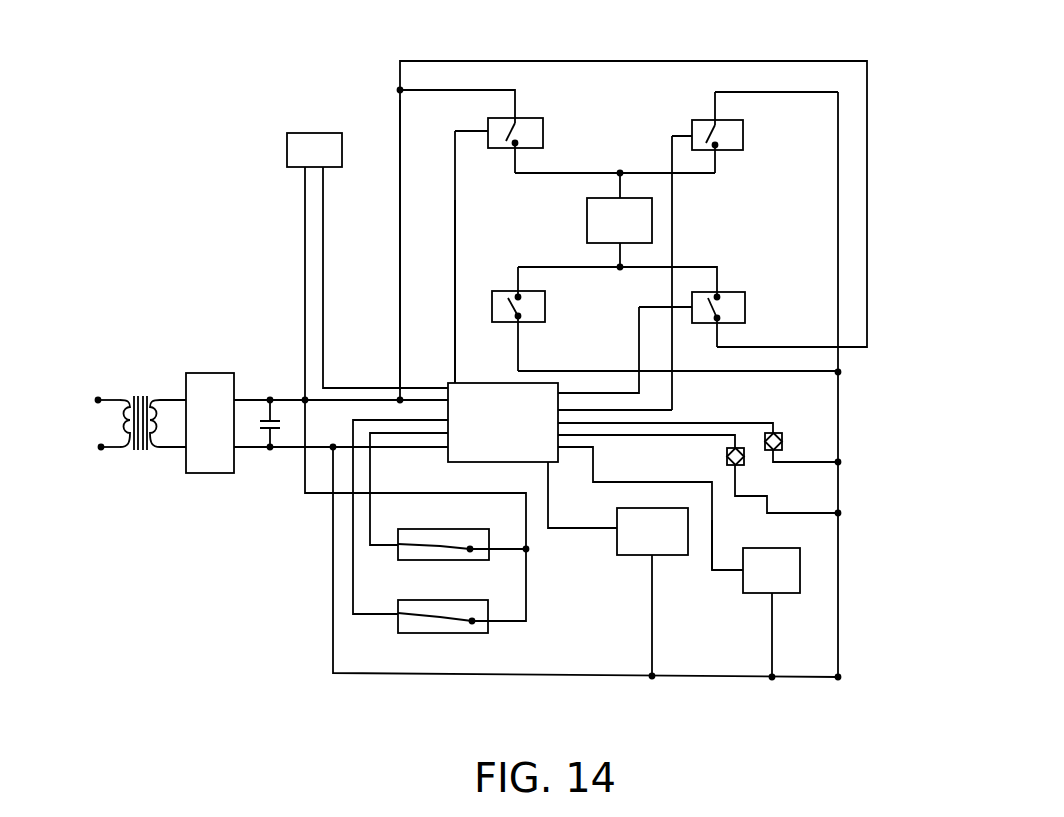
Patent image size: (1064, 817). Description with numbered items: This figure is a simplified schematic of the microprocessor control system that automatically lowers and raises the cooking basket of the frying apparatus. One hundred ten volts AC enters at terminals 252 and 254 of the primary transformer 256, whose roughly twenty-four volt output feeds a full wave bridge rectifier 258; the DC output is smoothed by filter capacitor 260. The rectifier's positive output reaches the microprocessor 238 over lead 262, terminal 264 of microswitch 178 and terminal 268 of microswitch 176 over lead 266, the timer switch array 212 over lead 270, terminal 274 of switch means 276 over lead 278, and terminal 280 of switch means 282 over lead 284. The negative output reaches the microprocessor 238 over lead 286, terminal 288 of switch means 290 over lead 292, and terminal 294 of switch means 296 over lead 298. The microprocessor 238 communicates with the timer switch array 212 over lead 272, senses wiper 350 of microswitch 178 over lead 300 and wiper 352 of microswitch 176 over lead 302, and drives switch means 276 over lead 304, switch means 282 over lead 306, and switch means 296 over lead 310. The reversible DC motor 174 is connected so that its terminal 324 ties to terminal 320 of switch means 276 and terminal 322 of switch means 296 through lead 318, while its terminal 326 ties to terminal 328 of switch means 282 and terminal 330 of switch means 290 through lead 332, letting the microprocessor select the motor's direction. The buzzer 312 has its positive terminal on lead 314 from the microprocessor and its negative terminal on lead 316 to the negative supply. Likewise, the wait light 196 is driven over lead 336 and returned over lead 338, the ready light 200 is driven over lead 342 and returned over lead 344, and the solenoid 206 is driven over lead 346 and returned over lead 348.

The lead 284 is at (592, 61).
The terminal of switch means 276 274 is at (518, 96).
The switch means 276 is at (488, 122).
The lead 304 is at (455, 183).
The terminal of switch means 290 330 is at (481, 291).
The terminal of switch means 276 320 is at (512, 162).
The lead 318 is at (640, 172).
The terminal of reversible DC motor 324 is at (617, 183).
The reversible DC motor 174 is at (619, 220).
The terminal of reversible DC motor 326 is at (617, 256).
The lead 332 is at (636, 269).
The terminal of switch means 282 328 is at (700, 266).
The terminal of switch means 296 294 is at (713, 100).
The switch means 296 is at (743, 126).
The lead 310 is at (672, 140).
The terminal of switch means 296 322 is at (715, 165).
The lead 298 is at (838, 250).
The switch means 290 is at (545, 307).
The terminal of switch means 290 288 is at (518, 343).
The switch means 282 is at (745, 305).
The terminal of switch means 282 280 is at (760, 347).
The lead 306 is at (639, 343).
The lead 292 is at (840, 375).
The microprocessor 238 is at (503, 422).
The lead 336 is at (730, 421).
The wait light 196 is at (783, 434).
The lead 342 is at (627, 436).
The ready light 200 is at (727, 453).
The lead 338 is at (802, 463).
The lead 344 is at (745, 497).
The solenoid 206 is at (771, 570).
The lead 346 is at (712, 568).
The lead 348 is at (775, 650).
The lead 314 is at (549, 537).
The buzzer 312 is at (643, 542).
The lead 316 is at (652, 623).
The terminal 252 is at (98, 398).
The terminal 254 is at (101, 449).
The primary transformer 256 is at (143, 398).
The full wave bridge rectifier 258 is at (212, 373).
The lead 262 is at (348, 399).
The lead 286 is at (290, 446).
The filter capacitor 260 is at (268, 432).
The timer switch array 212 is at (314, 150).
The lead 270 is at (305, 265).
The lead 272 is at (323, 243).
The lead 278 is at (400, 216).
The lead 300 is at (370, 482).
The lead 302 is at (352, 558).
The microswitch 178 is at (406, 560).
The wiper 350 is at (446, 550).
The microswitch 176 is at (408, 632).
The wiper 352 is at (448, 620).
The lead 266 is at (455, 493).
The terminal of microswitch 178 264 is at (527, 550).
The terminal of microswitch 176 268 is at (528, 622).